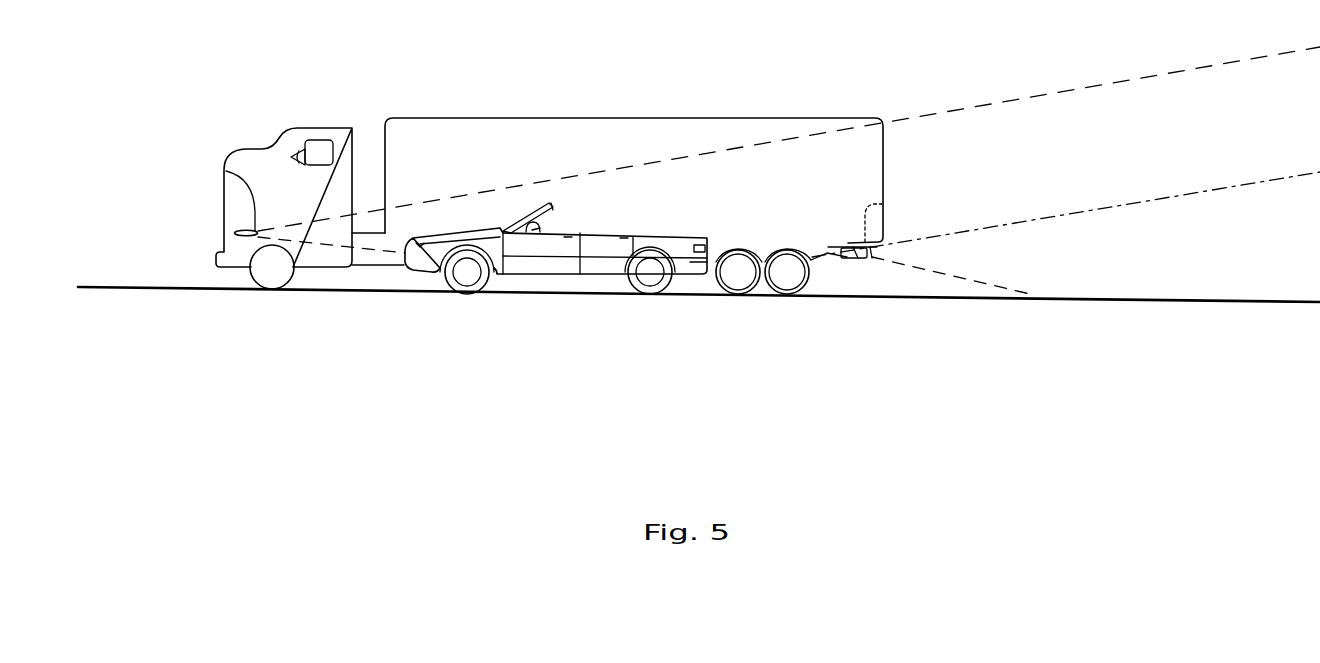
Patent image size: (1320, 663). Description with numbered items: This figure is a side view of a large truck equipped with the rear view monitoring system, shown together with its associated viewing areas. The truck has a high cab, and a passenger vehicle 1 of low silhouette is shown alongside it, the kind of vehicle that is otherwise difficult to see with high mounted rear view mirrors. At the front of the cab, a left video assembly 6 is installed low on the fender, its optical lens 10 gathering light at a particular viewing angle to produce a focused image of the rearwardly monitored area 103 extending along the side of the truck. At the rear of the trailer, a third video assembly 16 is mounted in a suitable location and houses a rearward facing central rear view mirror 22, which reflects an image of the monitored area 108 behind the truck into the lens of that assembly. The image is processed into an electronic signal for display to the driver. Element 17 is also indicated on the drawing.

The passenger vehicle 1 is at (559, 287).
The first, left video assembly 6 is at (238, 230).
The optical lens 10 is at (241, 184).
The third video assembly 16 is at (847, 258).
The rear sensor in trailer corner 17 is at (865, 241).
The central rear view mirror 22 is at (878, 258).
The rearwardly monitored area 103 is at (961, 186).
The monitored area 108 is at (1101, 281).